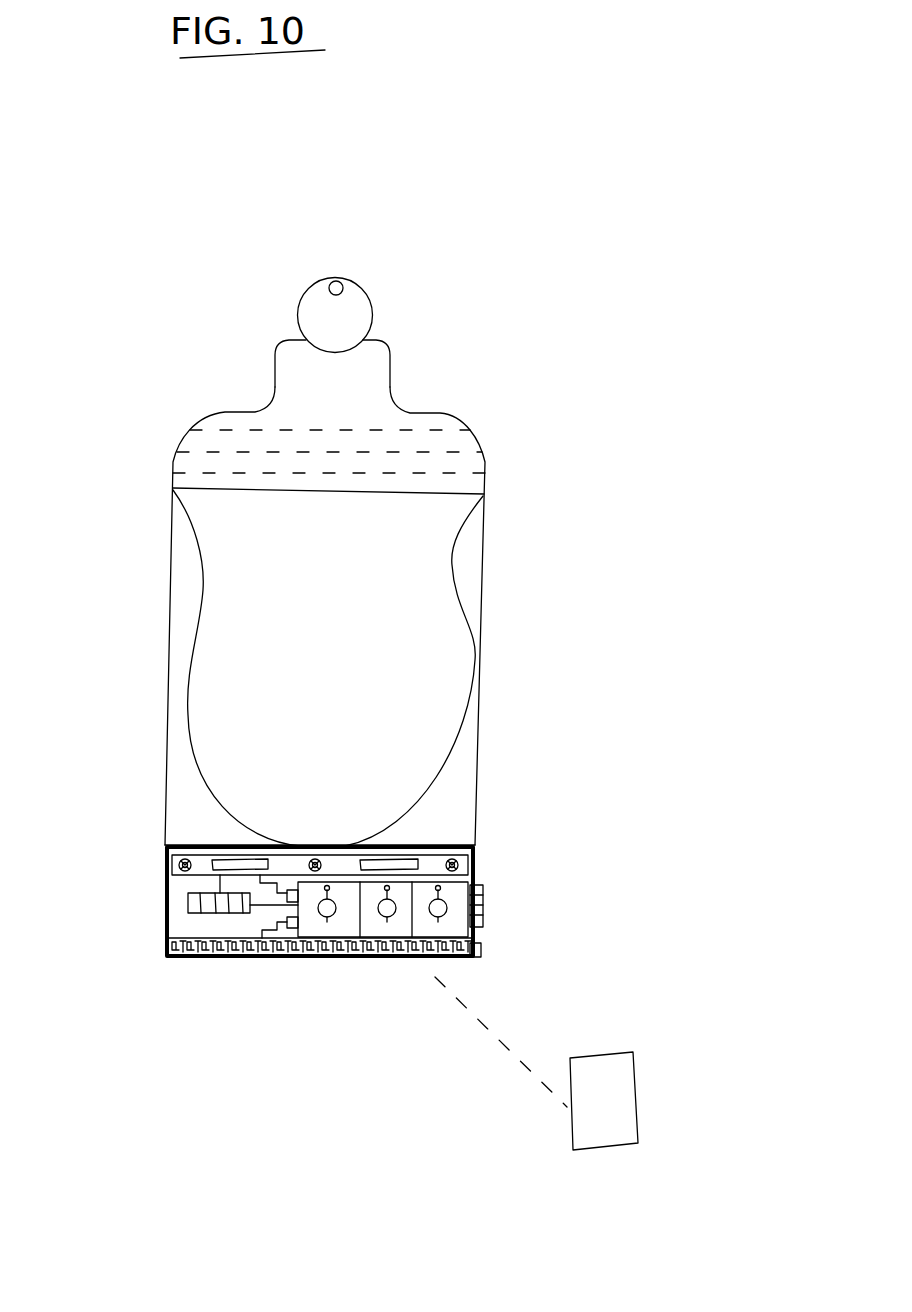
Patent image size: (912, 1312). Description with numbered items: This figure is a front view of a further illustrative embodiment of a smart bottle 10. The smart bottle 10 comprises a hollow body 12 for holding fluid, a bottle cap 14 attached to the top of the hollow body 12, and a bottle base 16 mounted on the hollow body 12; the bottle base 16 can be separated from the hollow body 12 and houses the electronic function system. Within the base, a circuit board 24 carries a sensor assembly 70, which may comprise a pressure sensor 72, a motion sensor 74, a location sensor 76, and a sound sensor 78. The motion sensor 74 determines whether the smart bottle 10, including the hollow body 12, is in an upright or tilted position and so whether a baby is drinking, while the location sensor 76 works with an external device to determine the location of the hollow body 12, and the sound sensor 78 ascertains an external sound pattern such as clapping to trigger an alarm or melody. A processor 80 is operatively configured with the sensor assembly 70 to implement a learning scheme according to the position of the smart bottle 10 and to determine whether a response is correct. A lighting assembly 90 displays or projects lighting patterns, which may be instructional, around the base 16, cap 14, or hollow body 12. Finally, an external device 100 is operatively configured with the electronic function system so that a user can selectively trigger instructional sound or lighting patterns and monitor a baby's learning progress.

The smart bottle 10 is at (213, 258).
The hollow body 12 is at (480, 712).
The bottle cap 14 is at (483, 453).
The bottle base 16 is at (502, 887).
The circuit board 24 is at (157, 923).
The sensor assembly 70 is at (184, 902).
The pressure sensor 72 is at (195, 902).
The motion sensor 74 is at (200, 913).
The location sensor 76 is at (213, 913).
The sound sensor 78 is at (232, 913).
The processor 80 is at (245, 913).
The lighting assembly 90 is at (207, 857).
The external device 100 is at (633, 1083).